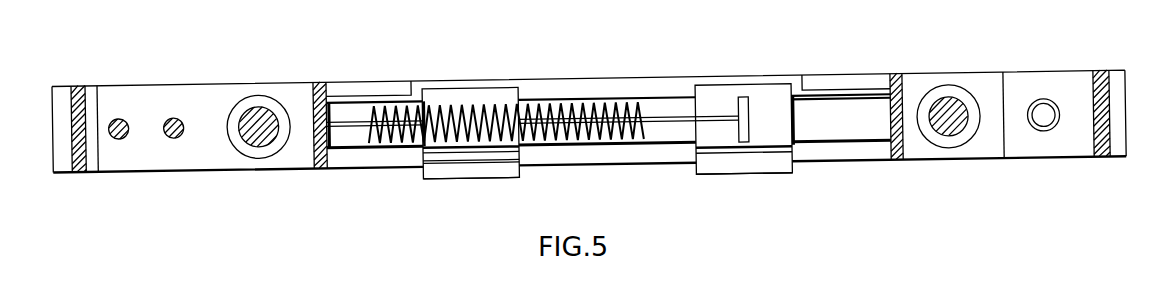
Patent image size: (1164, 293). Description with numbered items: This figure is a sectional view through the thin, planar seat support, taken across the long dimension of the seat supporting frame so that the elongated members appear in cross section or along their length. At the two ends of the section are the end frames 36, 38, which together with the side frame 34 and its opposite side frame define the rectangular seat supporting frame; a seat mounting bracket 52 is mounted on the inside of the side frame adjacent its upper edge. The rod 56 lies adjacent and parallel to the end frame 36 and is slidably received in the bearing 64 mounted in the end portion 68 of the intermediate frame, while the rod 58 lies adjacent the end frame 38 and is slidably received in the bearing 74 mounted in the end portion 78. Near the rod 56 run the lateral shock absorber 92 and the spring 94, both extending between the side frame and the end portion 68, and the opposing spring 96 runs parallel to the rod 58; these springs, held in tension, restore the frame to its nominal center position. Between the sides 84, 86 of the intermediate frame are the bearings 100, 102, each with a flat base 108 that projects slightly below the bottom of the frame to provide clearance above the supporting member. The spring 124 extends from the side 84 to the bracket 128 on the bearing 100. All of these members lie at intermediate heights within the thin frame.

The side frame 34 is at (833, 164).
The end frame 36 is at (75, 88).
The end frame 38 is at (1100, 86).
The seat mounting bracket 52 is at (377, 93).
The rod 56 is at (258, 111).
The rod 58 is at (948, 109).
The bearing 64 is at (270, 151).
The end portion 68 is at (183, 162).
The bearing 74 is at (955, 154).
The end portion 78 is at (995, 161).
The side 84 is at (318, 88).
The side 86 is at (897, 168).
The lateral shock absorber 92 is at (173, 122).
The spring 94 is at (118, 121).
The spring 96 is at (1048, 143).
The bearing 100 is at (775, 99).
The bearing 102 is at (472, 102).
The base 108 is at (477, 172).
The spring 124 is at (562, 113).
The bracket 128 is at (740, 106).